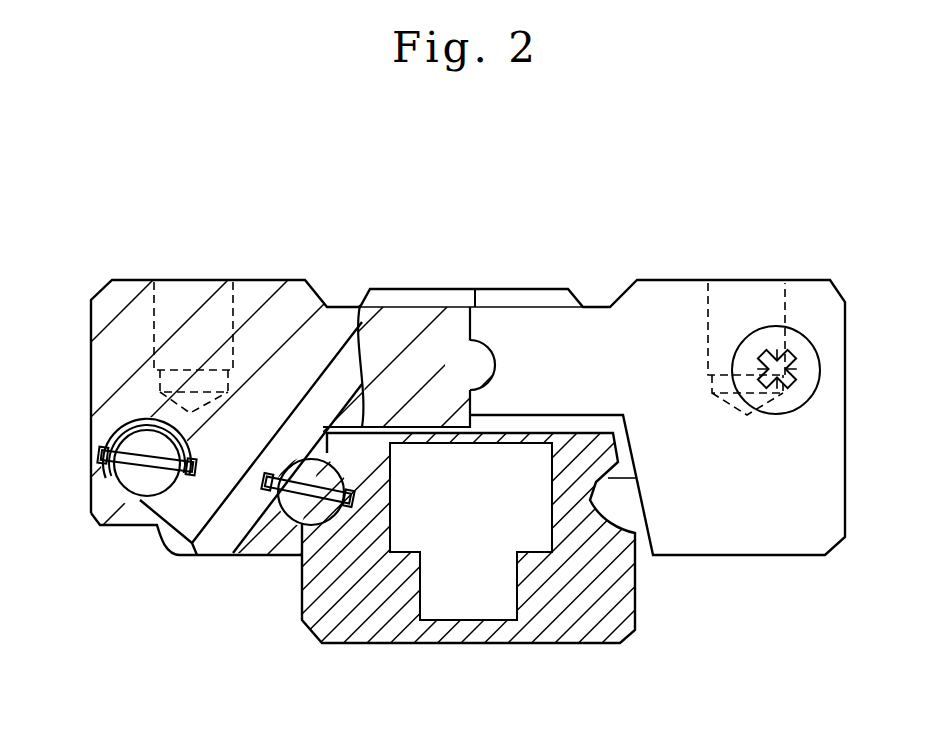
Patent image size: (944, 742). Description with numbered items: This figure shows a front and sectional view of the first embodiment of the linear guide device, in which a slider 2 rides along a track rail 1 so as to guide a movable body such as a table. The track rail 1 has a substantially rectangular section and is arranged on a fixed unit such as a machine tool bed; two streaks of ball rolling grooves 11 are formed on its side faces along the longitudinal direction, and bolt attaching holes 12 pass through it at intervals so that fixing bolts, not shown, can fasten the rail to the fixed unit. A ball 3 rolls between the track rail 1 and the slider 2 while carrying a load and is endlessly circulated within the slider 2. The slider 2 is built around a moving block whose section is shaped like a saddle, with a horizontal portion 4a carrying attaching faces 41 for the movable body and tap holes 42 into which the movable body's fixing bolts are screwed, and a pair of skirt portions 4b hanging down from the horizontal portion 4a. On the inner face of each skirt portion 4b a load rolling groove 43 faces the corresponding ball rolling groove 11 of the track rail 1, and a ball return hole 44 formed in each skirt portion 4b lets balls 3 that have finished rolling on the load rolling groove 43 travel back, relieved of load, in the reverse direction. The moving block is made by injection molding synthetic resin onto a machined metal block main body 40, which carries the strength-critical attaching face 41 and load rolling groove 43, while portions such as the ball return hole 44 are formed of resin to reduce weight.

The track rail 1 is at (637, 612).
The slider 2 is at (845, 450).
The ball 3 is at (360, 305).
The horizontal portion 4a is at (597, 317).
The skirt portion 4b is at (213, 512).
The ball rolling groove 11 is at (640, 478).
The bolt attaching hole 12 is at (422, 580).
The block main body 40 is at (310, 313).
The attaching face 41 is at (125, 280).
The tap hole 42 is at (160, 342).
The load rolling groove 43 is at (297, 515).
The ball return hole 44 is at (100, 448).